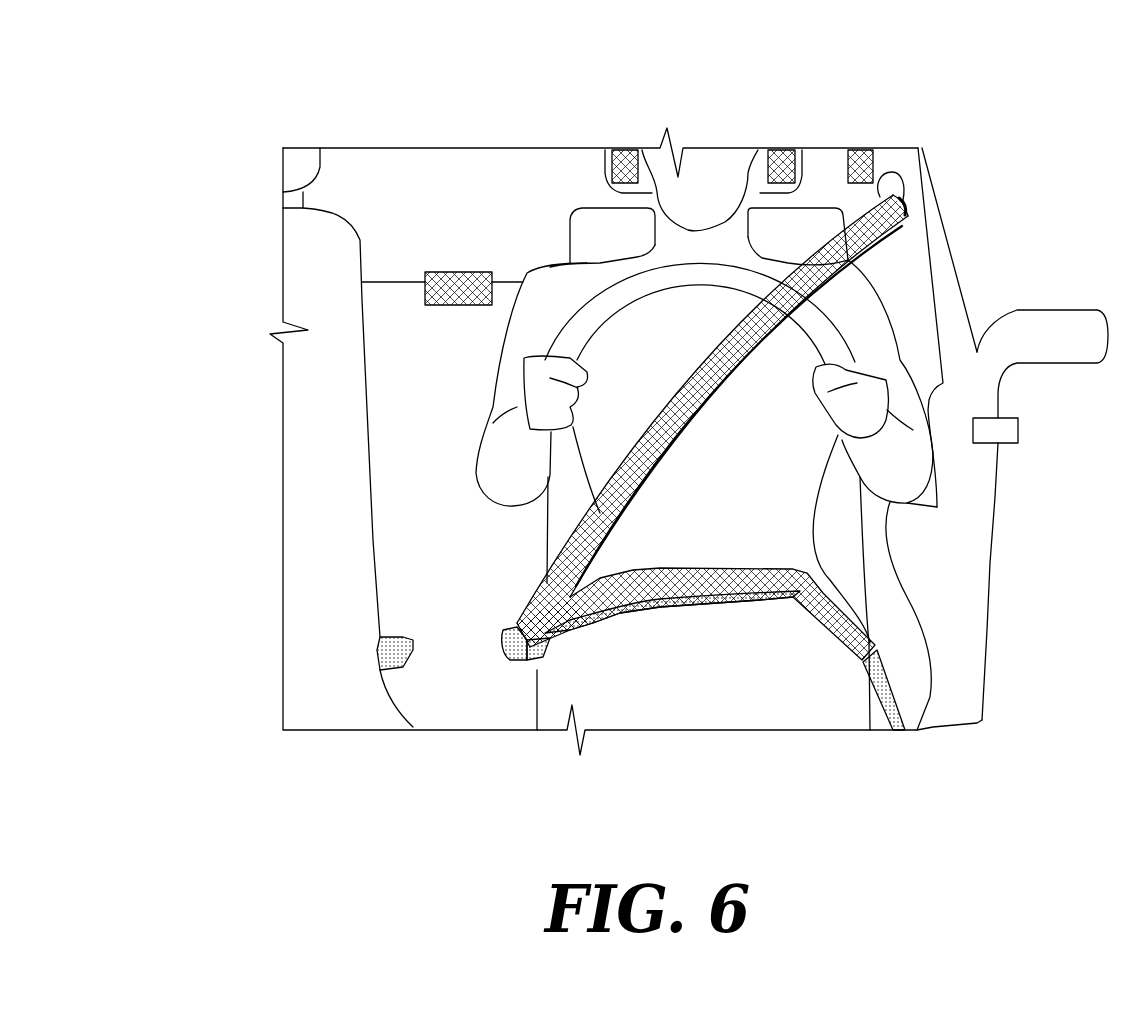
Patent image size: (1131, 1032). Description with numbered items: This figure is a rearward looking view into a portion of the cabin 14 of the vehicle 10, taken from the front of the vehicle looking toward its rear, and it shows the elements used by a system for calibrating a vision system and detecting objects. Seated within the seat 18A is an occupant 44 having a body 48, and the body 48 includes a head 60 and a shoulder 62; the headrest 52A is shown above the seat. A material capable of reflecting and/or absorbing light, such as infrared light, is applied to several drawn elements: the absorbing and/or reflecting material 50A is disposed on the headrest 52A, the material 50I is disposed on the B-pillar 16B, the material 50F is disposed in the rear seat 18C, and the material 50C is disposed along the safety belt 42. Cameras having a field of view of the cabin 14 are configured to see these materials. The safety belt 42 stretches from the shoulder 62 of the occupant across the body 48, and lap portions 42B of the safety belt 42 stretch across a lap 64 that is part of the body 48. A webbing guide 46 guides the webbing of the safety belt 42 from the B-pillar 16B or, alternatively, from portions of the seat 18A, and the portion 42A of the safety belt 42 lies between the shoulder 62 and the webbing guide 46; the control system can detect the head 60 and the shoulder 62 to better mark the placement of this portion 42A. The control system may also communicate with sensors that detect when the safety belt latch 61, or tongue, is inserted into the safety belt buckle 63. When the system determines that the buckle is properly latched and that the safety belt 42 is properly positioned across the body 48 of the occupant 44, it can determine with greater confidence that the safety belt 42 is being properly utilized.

The vehicle 10 is at (992, 628).
The cabin 14 is at (440, 185).
The B-pillar 16B is at (892, 167).
The seat 18A is at (571, 240).
The rear seat 18C is at (423, 513).
The safety belt 42 is at (797, 265).
The portion of the safety belt 42A is at (882, 214).
The portions of the safety belt 42B is at (757, 590).
The occupant 44 is at (883, 323).
The webbing guide 46 is at (897, 187).
The body 48 is at (780, 482).
The absorbing and/or reflecting material 50A is at (632, 167).
The absorbing and/or reflecting material 50C is at (895, 199).
The absorbing and/or reflecting material 50F is at (450, 277).
The absorbing and/or reflecting material 50I is at (857, 167).
The headrest 52A is at (630, 173).
The head 60 is at (699, 170).
The safety belt latch 61 is at (507, 637).
The shoulder 62 is at (867, 290).
The safety belt buckle 63 is at (523, 660).
The lap 64 is at (773, 557).